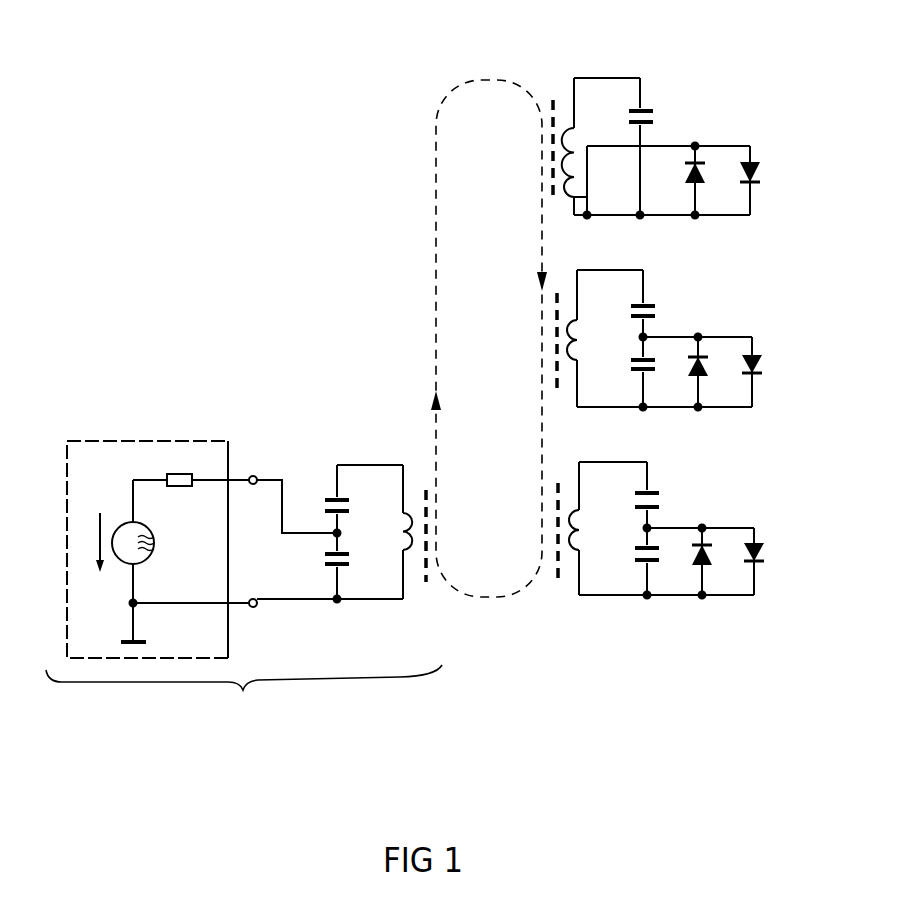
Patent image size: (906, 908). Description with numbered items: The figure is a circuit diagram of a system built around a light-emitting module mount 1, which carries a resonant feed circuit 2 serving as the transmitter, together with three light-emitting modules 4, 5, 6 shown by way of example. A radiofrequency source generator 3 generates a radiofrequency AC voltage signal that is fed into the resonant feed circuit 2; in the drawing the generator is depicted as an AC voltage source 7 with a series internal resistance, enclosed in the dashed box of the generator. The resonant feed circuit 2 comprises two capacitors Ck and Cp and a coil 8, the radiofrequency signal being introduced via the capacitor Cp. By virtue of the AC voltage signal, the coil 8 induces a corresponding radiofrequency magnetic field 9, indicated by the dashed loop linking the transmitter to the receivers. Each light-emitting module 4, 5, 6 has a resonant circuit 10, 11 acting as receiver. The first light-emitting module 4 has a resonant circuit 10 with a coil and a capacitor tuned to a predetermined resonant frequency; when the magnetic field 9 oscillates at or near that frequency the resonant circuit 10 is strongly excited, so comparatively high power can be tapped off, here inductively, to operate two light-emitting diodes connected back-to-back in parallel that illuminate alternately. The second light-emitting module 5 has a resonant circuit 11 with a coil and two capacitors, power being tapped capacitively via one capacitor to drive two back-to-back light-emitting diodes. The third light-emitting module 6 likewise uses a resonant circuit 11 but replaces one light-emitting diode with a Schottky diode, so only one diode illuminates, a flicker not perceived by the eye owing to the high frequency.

The light-emitting module mount 1 is at (244, 699).
The resonant feed circuit 2 is at (223, 441).
The radiofrequency source generator 3 is at (367, 464).
The first light-emitting module 4 is at (697, 100).
The second light-emitting module 5 is at (705, 318).
The third light-emitting module 6 is at (712, 500).
The high-frequency voltage source 7 is at (150, 556).
The coil 8 is at (397, 535).
The radiofrequency magnetic field 9 is at (448, 92).
The resonant circuit 10 is at (583, 78).
The resonant circuit 11 is at (647, 288).